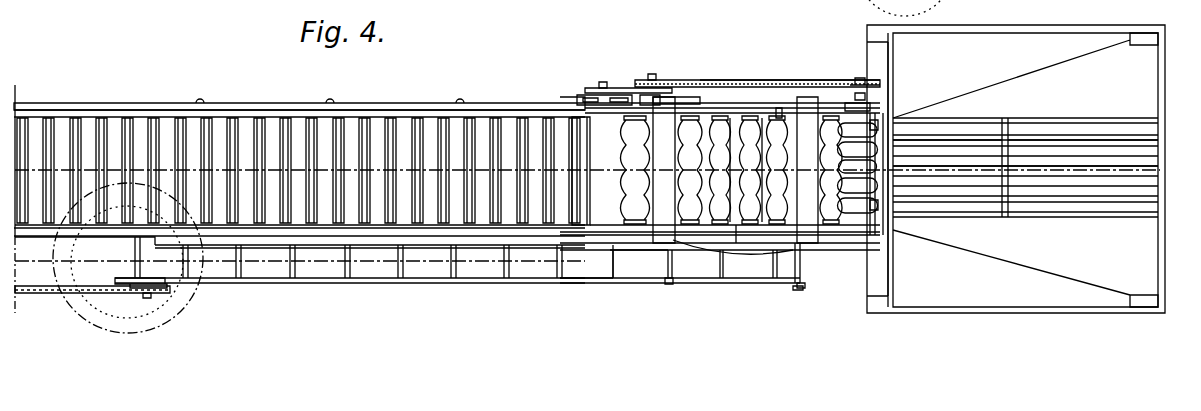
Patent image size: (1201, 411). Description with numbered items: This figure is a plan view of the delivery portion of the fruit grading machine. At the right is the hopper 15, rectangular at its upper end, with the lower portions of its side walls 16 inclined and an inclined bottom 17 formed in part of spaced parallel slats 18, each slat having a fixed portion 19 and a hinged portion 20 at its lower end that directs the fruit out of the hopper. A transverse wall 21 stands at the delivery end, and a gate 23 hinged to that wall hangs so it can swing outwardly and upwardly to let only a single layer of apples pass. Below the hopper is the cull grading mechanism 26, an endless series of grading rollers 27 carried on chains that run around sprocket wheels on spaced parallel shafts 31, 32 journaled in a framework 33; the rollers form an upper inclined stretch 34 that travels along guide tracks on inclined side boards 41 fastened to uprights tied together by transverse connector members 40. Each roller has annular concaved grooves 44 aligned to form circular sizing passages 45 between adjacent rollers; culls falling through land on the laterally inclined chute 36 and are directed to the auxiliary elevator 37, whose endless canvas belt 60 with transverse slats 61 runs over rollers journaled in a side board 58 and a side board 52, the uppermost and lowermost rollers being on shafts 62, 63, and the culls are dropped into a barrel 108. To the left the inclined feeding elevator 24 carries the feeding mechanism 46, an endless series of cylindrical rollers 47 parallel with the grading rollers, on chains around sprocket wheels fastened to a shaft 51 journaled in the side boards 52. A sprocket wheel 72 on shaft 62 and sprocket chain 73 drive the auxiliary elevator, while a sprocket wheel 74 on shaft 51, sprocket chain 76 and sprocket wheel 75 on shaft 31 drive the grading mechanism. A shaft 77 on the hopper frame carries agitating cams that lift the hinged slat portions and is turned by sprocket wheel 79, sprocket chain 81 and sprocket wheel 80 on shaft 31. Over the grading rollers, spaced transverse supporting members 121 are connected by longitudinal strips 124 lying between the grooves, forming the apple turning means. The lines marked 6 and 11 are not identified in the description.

The longitudinal center line 6 is at (587, 169).
The conveyor center line 11 is at (106, 263).
The hopper 15 is at (1165, 28).
The side walls 16 is at (1020, 55).
The bottom 17 is at (1066, 113).
The slats 18 is at (1150, 168).
The fixed portion 19 is at (1110, 148).
The hinged portion 20 is at (957, 150).
The transverse wall 21 is at (893, 261).
The gate 23 is at (880, 112).
The feeding elevator 24 is at (255, 105).
The grading mechanism 26 is at (750, 118).
The grading rollers 27 is at (707, 118).
The shaft 31 is at (660, 97).
The shaft 32 is at (810, 97).
The framework 33 is at (672, 100).
The upper inclined stretch 34 is at (720, 225).
The chute 36 is at (736, 226).
The auxiliary elevator 37 is at (487, 279).
The transverse connector members 40 is at (668, 285).
The side boards 41 is at (730, 112).
The annular concaved grooves 44 is at (778, 122).
The grading openings 45 is at (765, 116).
The feeding mechanism 46 is at (380, 117).
The rollers 47 is at (166, 122).
The shaft 51 is at (603, 86).
The side boards 52 is at (432, 104).
The side board 58 is at (597, 284).
The endless belt 60 is at (323, 283).
The transverse slats 61 is at (500, 257).
The shaft 62 is at (151, 297).
The shaft 63 is at (800, 288).
The sprocket wheel 72 is at (160, 287).
The sprocket chain 73 is at (47, 294).
The sprocket wheel 74 is at (588, 90).
The sprocket wheel 75 is at (672, 84).
The sprocket chain 76 is at (622, 118).
The shaft 77 is at (870, 84).
The sprocket wheel 79 is at (880, 96).
The sprocket wheel 80 is at (650, 80).
The sprocket chain 81 is at (715, 84).
The barrel 108 is at (160, 325).
The transverse supporting members 121 is at (780, 112).
The longitudinal strips 124 is at (686, 115).